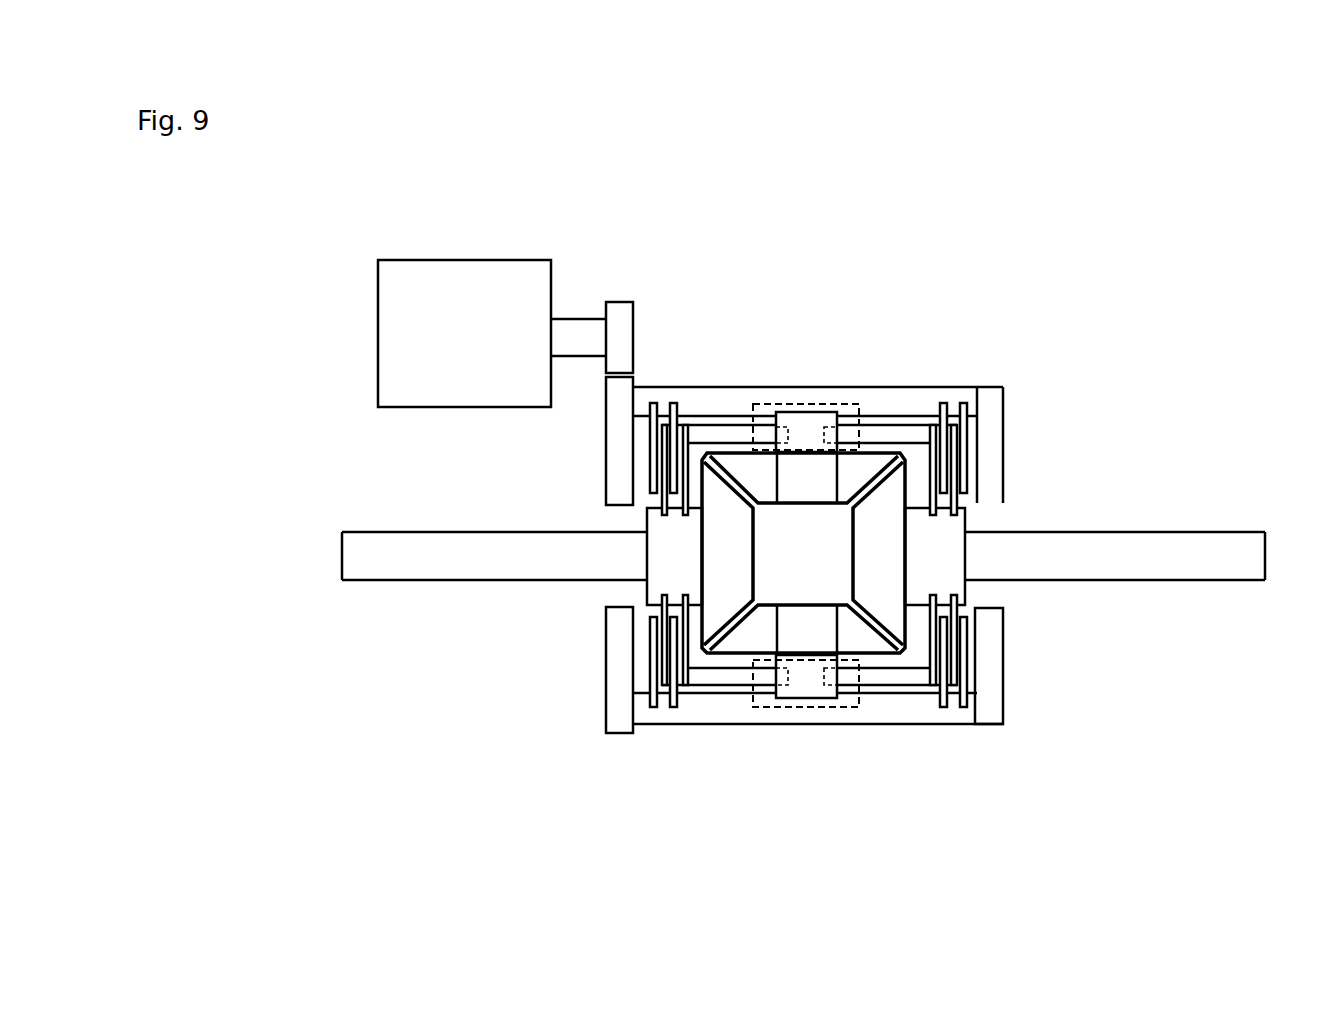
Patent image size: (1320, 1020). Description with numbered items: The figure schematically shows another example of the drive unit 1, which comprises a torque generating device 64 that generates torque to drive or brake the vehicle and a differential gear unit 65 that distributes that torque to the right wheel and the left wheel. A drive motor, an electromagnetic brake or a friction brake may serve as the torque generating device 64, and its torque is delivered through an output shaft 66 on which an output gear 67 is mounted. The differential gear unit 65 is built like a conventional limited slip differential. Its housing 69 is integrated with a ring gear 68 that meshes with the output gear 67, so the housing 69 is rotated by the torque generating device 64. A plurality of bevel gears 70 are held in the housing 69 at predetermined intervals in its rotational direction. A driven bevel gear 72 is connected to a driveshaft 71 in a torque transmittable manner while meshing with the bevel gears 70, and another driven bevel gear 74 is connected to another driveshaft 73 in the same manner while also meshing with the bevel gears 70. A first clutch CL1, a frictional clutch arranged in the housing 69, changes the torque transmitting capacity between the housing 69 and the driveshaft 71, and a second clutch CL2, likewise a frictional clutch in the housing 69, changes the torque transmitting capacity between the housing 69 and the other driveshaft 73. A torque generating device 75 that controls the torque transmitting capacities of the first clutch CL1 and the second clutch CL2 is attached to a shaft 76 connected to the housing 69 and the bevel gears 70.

The drive unit 1 is at (1054, 351).
The torque generating device 64 is at (388, 342).
The differential gear unit 65 is at (939, 355).
The output shaft 66 is at (578, 326).
The output gear 67 is at (626, 320).
The ring gear 68 is at (618, 460).
The housing 69 is at (877, 396).
The bevel gears 70 is at (740, 460).
The driveshaft 71 is at (461, 560).
The driven bevel gear 72 is at (718, 543).
The another driveshaft 73 is at (1145, 565).
The another driven bevel gear 74 is at (893, 486).
The torque generating device 75 is at (765, 404).
The shaft 76 is at (818, 432).
The first clutch CL1 is at (630, 662).
The second clutch CL2 is at (980, 660).